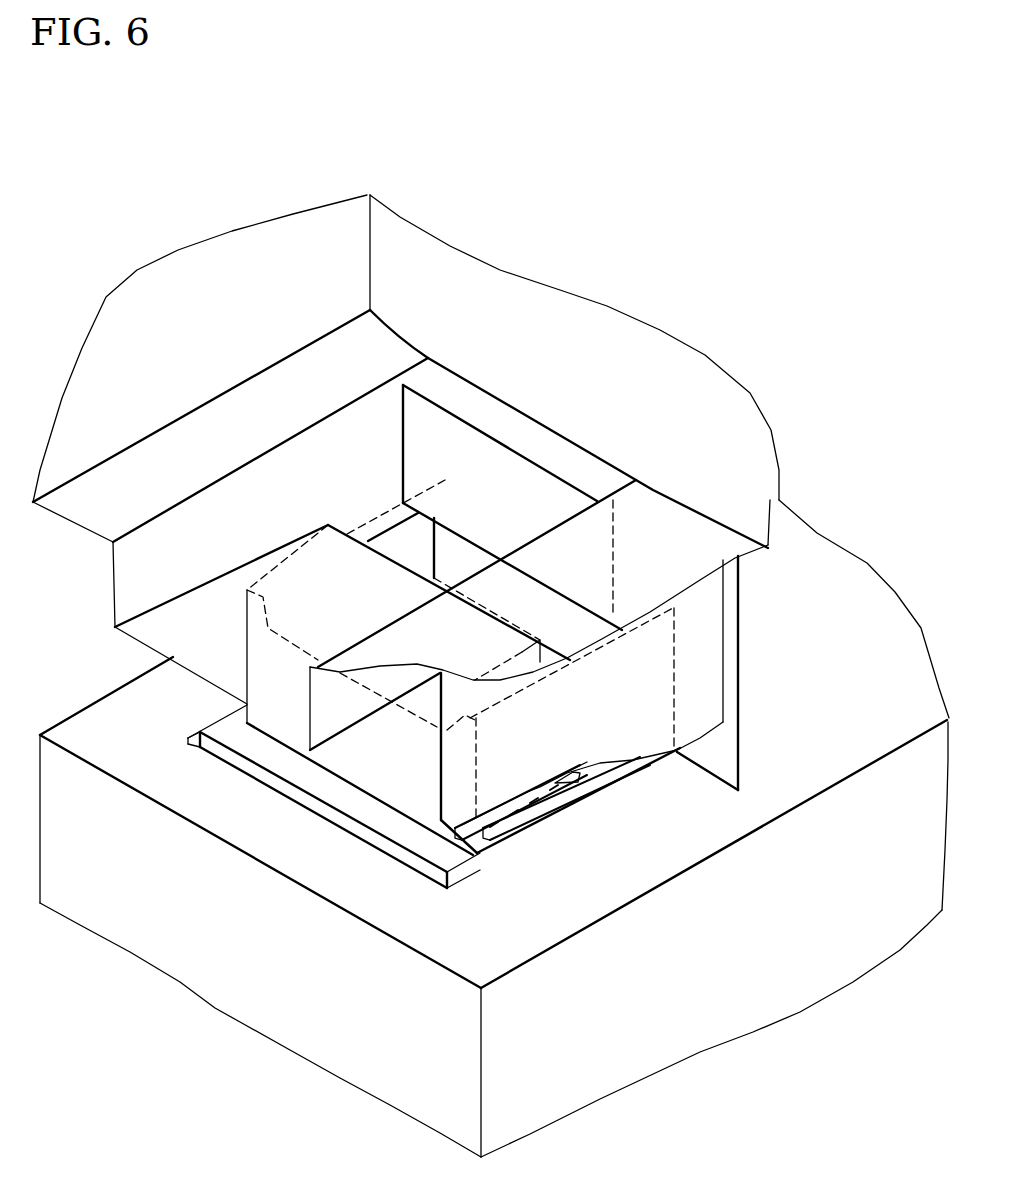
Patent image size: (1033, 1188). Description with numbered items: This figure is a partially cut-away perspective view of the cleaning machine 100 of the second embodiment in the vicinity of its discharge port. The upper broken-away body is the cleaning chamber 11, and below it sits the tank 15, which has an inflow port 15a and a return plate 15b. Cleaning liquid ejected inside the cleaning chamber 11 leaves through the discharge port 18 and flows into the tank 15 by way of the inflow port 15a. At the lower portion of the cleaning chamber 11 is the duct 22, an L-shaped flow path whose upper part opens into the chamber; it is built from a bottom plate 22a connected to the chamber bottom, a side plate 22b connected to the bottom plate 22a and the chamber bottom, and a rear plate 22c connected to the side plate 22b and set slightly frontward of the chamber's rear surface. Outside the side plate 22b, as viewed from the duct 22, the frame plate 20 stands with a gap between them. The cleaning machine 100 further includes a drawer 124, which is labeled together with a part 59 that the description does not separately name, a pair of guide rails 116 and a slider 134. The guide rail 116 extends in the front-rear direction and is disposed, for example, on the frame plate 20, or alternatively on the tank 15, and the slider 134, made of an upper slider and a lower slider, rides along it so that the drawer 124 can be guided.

The cleaning machine 100 is at (920, 223).
The cleaning chamber 11 is at (610, 305).
The discharge port 18 is at (450, 540).
The duct 22 is at (293, 308).
The bottom plate 22a is at (214, 590).
The side plate 22b is at (257, 473).
The rear plate 22c is at (417, 413).
The frame plate 20 is at (578, 668).
The drawer 124 is at (803, 598).
The edge portion 59 is at (803, 598).
The tank 15 is at (130, 817).
The inflow port 15a is at (227, 712).
The return plate 15b is at (303, 775).
The guide rail 116 is at (573, 790).
The slider 134 is at (525, 783).